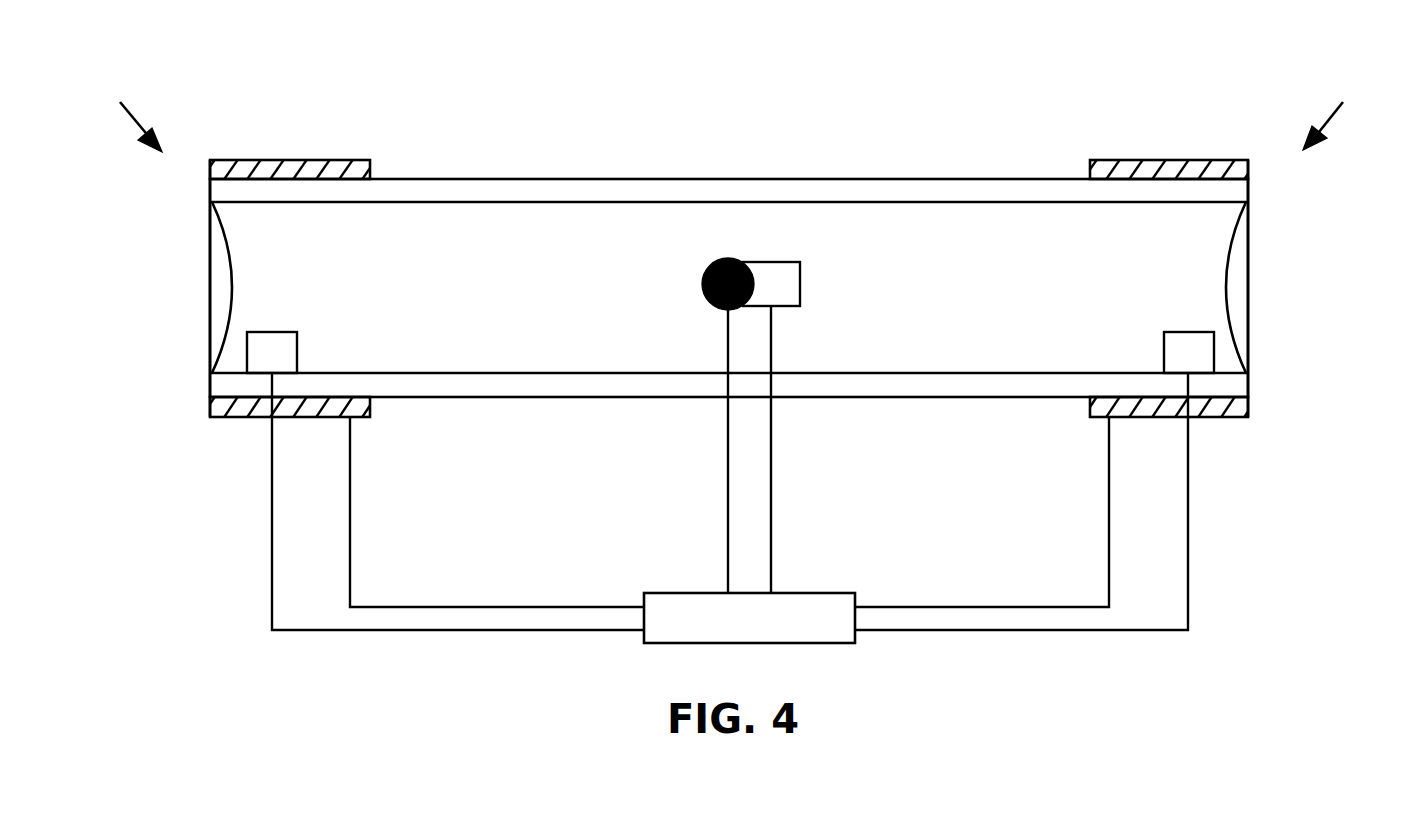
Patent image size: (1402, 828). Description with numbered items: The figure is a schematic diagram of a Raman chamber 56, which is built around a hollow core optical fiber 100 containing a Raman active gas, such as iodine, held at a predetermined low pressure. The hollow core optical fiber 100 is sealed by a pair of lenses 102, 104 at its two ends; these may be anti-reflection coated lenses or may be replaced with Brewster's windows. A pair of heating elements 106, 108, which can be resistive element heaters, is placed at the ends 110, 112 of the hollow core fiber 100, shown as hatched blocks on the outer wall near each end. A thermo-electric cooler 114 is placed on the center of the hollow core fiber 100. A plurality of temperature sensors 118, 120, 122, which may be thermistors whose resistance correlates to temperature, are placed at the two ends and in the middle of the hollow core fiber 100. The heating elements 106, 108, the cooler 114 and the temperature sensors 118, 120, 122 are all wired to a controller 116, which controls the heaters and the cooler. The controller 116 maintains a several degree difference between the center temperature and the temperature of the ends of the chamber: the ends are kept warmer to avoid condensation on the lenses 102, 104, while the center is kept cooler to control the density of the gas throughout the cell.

The Raman chamber 56 is at (708, 76).
The hollow core optical fiber 100 is at (731, 178).
The lens 102 is at (240, 288).
The lens 104 is at (1250, 288).
The heating element 106 is at (297, 160).
The heating element 108 is at (1178, 160).
The end 110 is at (125, 111).
The end 112 is at (1343, 110).
The thermo-electric cooler 114 is at (703, 280).
The controller 116 is at (820, 593).
The temperature sensor 118 is at (298, 353).
The temperature sensor 120 is at (801, 283).
The temperature sensor 122 is at (1163, 350).